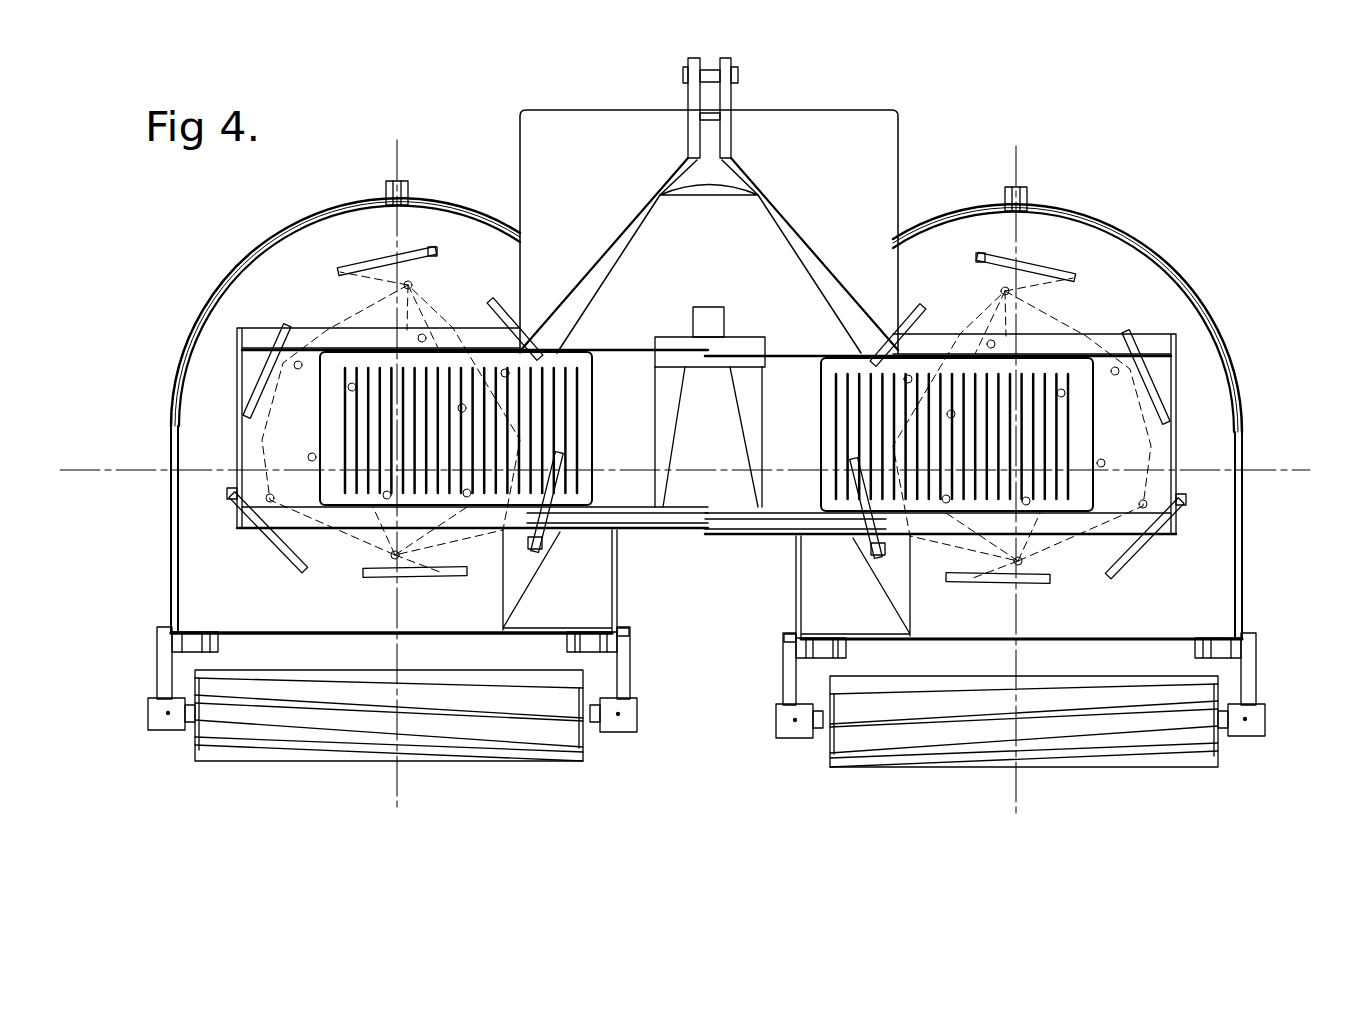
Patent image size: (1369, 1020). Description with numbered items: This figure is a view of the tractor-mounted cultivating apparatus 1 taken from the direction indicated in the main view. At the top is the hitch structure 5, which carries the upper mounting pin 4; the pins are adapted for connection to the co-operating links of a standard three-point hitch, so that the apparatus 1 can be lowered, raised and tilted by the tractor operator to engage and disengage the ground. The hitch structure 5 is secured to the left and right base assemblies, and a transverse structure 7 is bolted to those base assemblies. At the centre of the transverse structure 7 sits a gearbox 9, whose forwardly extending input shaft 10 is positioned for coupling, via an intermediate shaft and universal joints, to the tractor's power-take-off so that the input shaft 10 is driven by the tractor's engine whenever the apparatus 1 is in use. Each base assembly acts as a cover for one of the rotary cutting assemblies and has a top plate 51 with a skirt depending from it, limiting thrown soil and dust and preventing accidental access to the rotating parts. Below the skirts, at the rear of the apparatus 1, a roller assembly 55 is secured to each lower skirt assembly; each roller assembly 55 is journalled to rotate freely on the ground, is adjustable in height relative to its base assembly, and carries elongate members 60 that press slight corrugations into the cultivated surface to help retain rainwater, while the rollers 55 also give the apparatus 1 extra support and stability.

The apparatus 1 is at (1163, 215).
The upper mounting pin 4 is at (733, 73).
The hitch structure 5 is at (845, 130).
The transverse structure 7 is at (1085, 427).
The gearbox 9 is at (663, 413).
The input shaft 10 is at (725, 311).
The top plate 51 is at (222, 621).
The roller assembly 55 is at (195, 762).
The elongate members 60 is at (312, 738).